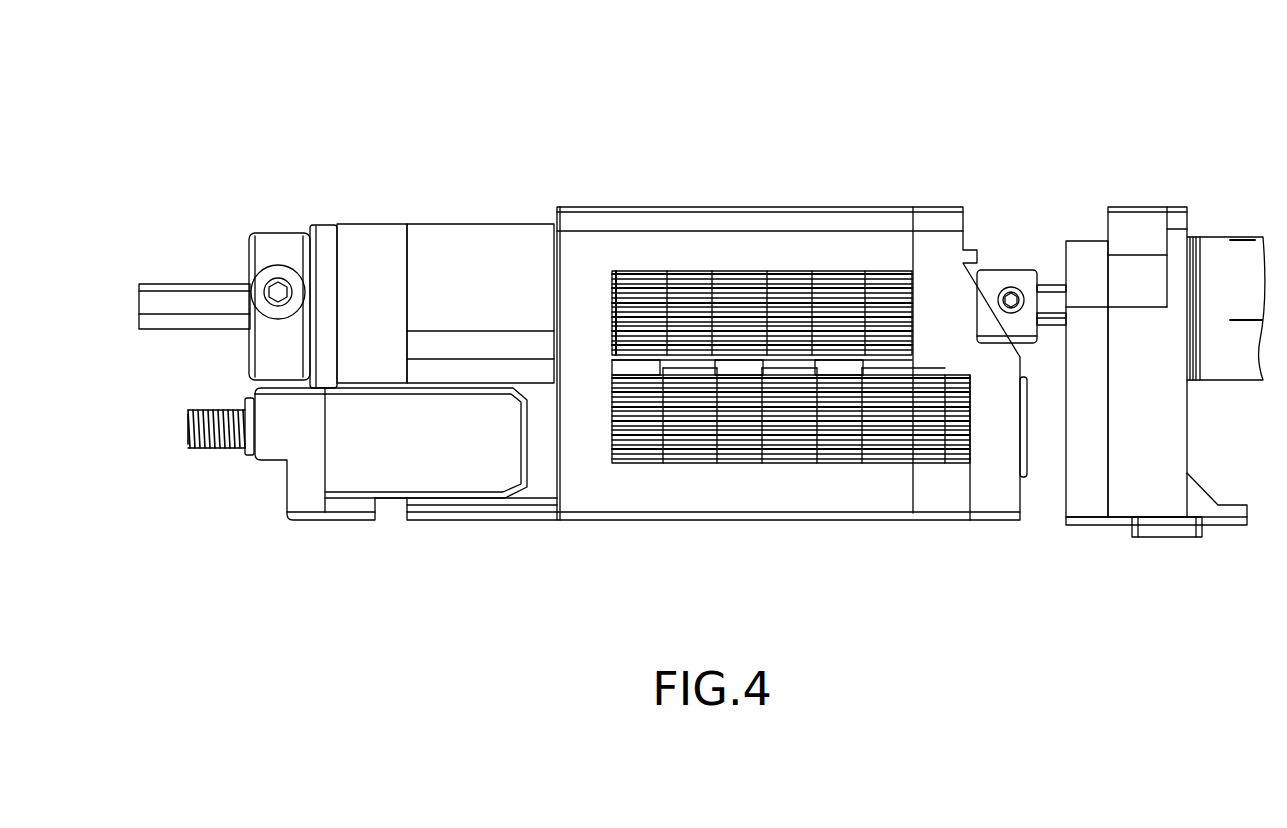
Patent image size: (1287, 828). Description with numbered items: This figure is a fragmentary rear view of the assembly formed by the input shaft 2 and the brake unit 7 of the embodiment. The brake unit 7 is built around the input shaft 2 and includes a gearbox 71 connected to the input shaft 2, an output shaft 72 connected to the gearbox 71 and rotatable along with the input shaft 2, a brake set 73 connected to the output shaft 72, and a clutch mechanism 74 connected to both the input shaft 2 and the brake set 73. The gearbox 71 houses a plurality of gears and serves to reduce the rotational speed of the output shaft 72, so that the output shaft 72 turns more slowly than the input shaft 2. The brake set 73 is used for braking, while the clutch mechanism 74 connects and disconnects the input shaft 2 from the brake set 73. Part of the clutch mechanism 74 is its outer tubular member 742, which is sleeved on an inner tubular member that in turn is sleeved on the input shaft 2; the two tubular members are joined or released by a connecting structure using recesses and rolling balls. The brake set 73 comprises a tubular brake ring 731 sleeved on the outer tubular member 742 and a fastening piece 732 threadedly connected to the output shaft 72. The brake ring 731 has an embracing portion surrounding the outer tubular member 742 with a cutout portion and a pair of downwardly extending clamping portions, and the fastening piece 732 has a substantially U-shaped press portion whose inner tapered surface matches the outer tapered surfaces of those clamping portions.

The input shaft 2 is at (192, 268).
The brake unit 7 is at (899, 136).
The gearbox 71 is at (819, 190).
The output shaft 72 is at (215, 468).
The brake set 73 is at (348, 540).
The brake ring 731 is at (486, 243).
The fastening piece 732 is at (458, 473).
The clutch mechanism 74 is at (353, 210).
The outer tubular member 742 is at (388, 240).